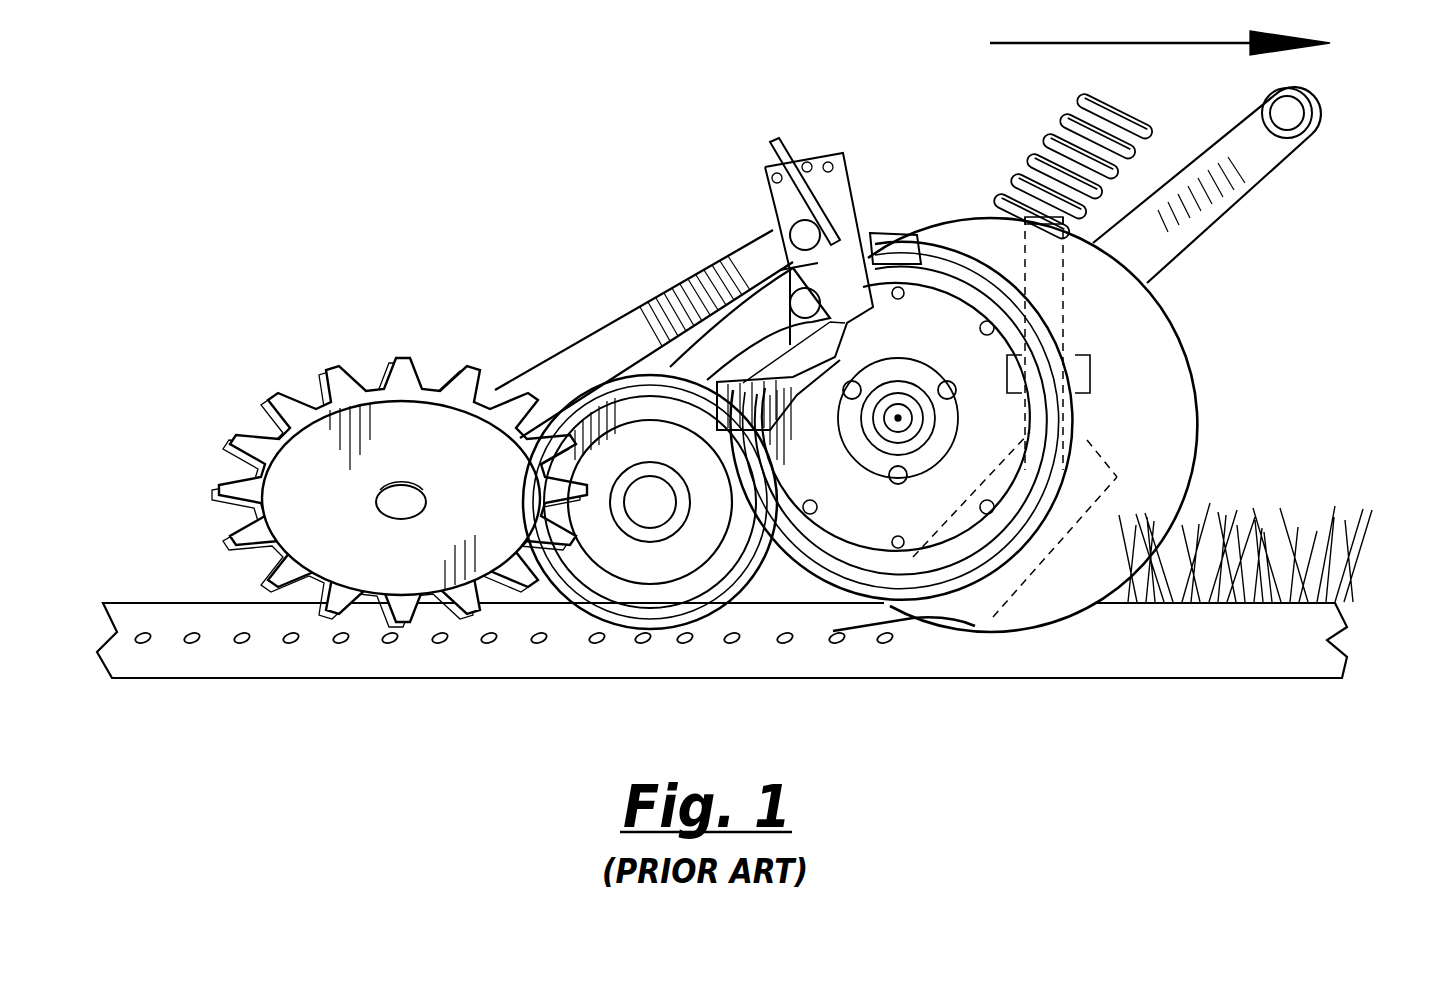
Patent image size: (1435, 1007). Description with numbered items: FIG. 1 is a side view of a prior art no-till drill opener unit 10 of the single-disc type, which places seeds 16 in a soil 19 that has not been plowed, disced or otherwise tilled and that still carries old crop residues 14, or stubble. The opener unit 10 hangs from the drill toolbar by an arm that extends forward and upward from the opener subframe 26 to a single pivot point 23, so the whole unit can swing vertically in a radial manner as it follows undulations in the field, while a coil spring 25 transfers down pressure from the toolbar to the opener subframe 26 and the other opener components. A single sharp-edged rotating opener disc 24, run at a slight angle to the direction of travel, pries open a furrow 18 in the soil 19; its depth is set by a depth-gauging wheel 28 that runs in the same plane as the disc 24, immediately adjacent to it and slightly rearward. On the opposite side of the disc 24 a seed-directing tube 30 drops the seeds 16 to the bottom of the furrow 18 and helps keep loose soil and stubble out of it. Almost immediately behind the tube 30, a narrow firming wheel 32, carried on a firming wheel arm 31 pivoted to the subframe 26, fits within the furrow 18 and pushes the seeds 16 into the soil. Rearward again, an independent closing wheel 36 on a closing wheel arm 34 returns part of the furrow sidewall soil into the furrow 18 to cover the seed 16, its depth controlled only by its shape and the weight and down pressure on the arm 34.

The no-till drill opener unit 10 is at (648, 108).
The crop residues 14 is at (1256, 480).
The seeds 16 is at (440, 640).
The furrow 18 is at (830, 614).
The soil 19 is at (1270, 645).
The pivot point 23 is at (1305, 122).
The opener disc 24 is at (1100, 570).
The coil spring 25 is at (1058, 115).
The opener subframe 26 is at (845, 198).
The depth-gauging wheel 28 is at (930, 258).
The seed-directing tube 30 is at (1075, 290).
The firming wheel arm 31 is at (748, 325).
The firming wheel 32 is at (640, 640).
The closing wheel arm 34 is at (633, 345).
The closing wheel 36 is at (312, 356).